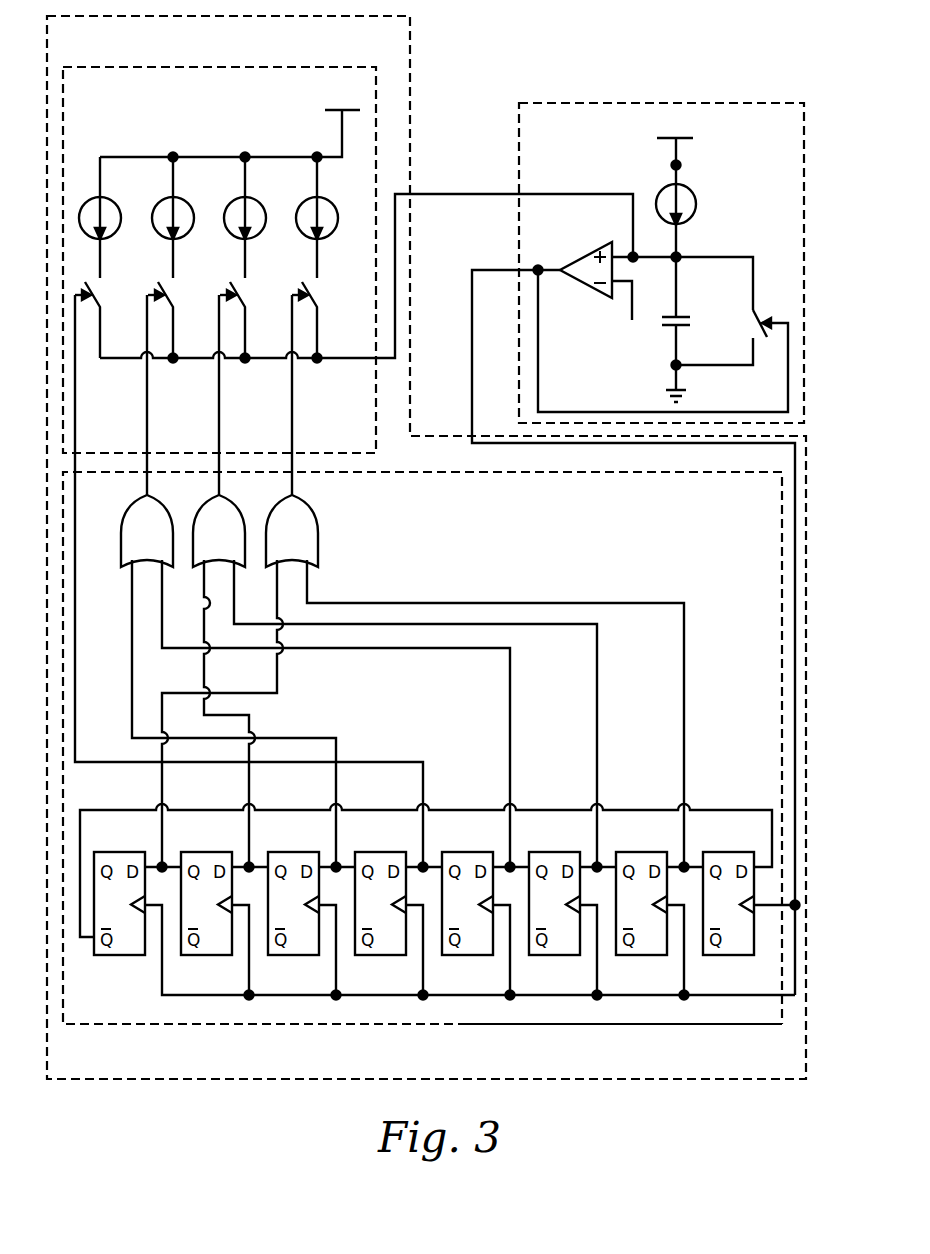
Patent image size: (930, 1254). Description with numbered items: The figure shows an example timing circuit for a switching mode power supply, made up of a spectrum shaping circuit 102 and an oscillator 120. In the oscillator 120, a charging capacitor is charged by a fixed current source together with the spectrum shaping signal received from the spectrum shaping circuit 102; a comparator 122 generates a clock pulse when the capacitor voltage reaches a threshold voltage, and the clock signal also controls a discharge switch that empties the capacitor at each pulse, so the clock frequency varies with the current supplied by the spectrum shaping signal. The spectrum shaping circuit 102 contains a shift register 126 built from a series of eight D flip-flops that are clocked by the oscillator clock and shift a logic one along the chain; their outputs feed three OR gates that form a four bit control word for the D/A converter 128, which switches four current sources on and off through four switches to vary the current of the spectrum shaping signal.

The spectrum shaping circuit 102 is at (287, 1079).
The oscillator 120 is at (715, 102).
The comparator 122 is at (600, 244).
The shift register 126 is at (230, 1024).
The D/A converter 128 is at (165, 67).